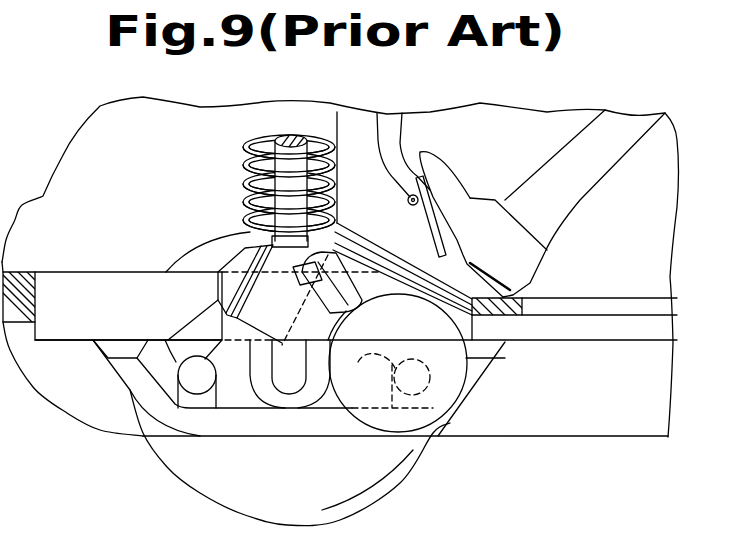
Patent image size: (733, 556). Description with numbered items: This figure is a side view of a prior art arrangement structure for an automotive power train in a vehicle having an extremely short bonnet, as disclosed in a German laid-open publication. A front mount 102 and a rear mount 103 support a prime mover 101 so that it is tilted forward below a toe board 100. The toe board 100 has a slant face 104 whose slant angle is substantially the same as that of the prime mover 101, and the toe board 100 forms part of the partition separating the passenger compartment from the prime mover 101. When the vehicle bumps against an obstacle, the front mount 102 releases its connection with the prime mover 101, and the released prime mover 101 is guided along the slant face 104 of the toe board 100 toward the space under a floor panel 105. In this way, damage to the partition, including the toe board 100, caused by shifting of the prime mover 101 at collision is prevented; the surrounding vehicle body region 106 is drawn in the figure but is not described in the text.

The toe board 100 is at (365, 212).
The prime mover 101 is at (237, 243).
The front mount 102 is at (177, 360).
The rear mount 103 is at (397, 363).
The slant face 104 is at (372, 236).
The floor panel 105 is at (592, 343).
The vehicle body / dash panel 106 is at (625, 268).